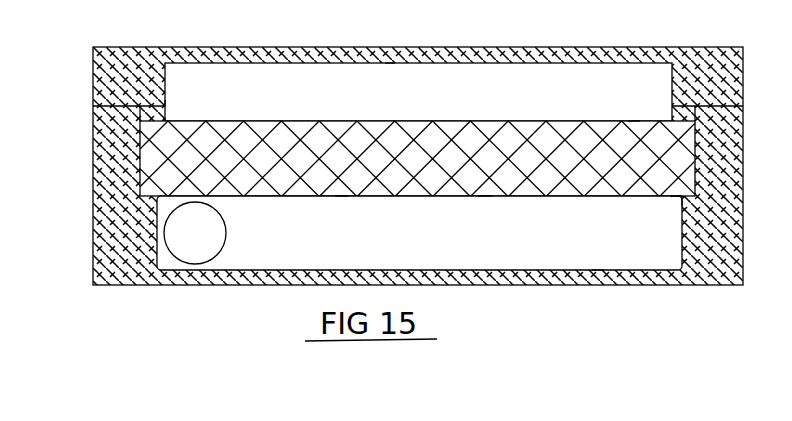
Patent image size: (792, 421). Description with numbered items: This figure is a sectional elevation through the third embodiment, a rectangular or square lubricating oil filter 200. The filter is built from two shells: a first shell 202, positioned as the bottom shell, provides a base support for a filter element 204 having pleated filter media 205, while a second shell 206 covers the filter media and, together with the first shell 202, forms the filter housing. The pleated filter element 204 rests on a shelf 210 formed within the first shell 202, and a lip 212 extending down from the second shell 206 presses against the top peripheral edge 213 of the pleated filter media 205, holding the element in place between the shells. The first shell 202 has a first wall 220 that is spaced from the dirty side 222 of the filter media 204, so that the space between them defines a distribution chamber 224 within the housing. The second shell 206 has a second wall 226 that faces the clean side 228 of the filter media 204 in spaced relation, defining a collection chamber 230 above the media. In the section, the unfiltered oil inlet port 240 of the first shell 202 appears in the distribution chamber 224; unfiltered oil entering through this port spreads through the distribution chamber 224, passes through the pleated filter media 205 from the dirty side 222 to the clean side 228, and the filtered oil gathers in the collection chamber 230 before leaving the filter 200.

The lubricating oil filter 200 is at (649, 37).
The first shell 202 is at (548, 284).
The filter element 204 is at (484, 196).
The pleated filter media 205 is at (347, 111).
The second shell 206 is at (230, 49).
The shelf 210 is at (686, 198).
The lip 212 is at (163, 105).
The top peripheral edge 213 is at (182, 120).
The first wall 220 is at (597, 268).
The dirty side 222 is at (341, 197).
The distribution chamber 224 is at (440, 258).
The second wall 226 is at (390, 63).
The clean side 228 is at (634, 121).
The collection chamber 230 is at (545, 103).
The unfiltered oil inlet port 240 is at (222, 238).